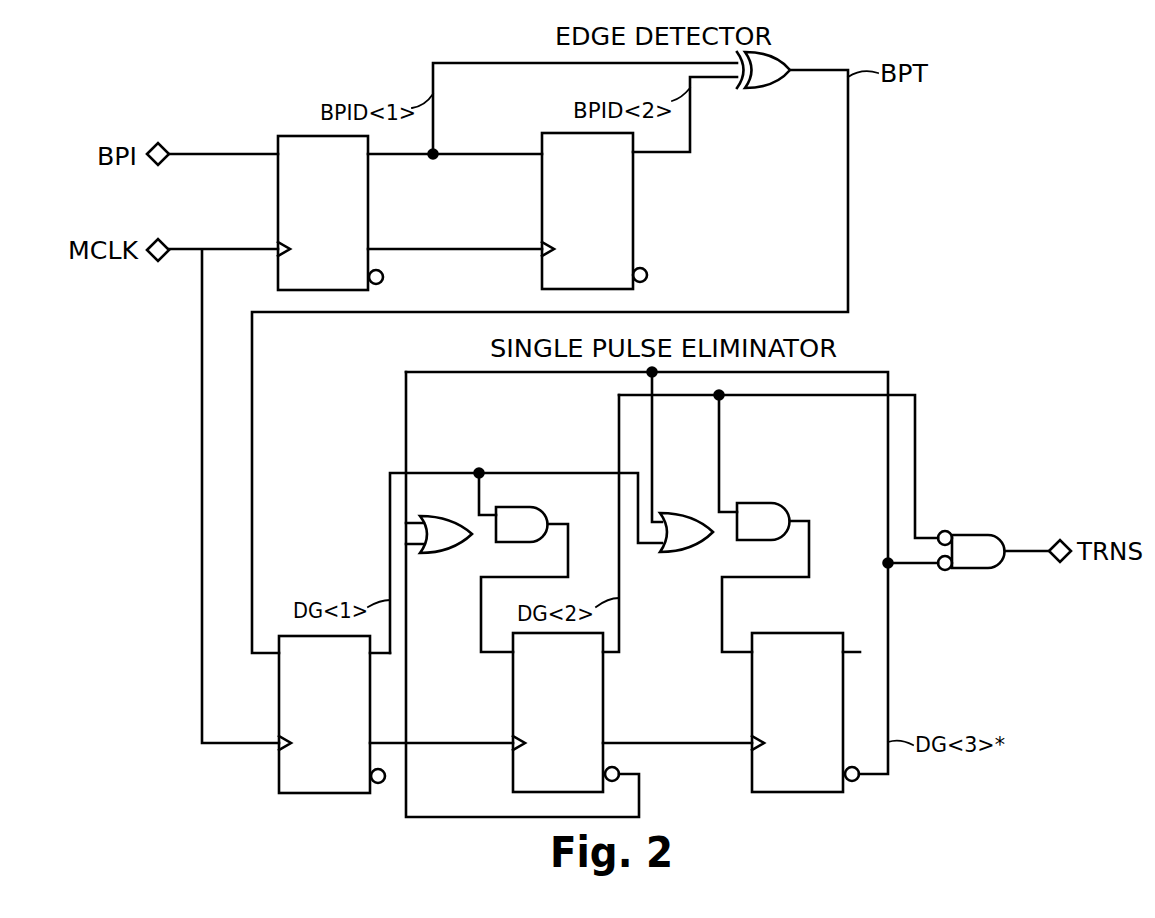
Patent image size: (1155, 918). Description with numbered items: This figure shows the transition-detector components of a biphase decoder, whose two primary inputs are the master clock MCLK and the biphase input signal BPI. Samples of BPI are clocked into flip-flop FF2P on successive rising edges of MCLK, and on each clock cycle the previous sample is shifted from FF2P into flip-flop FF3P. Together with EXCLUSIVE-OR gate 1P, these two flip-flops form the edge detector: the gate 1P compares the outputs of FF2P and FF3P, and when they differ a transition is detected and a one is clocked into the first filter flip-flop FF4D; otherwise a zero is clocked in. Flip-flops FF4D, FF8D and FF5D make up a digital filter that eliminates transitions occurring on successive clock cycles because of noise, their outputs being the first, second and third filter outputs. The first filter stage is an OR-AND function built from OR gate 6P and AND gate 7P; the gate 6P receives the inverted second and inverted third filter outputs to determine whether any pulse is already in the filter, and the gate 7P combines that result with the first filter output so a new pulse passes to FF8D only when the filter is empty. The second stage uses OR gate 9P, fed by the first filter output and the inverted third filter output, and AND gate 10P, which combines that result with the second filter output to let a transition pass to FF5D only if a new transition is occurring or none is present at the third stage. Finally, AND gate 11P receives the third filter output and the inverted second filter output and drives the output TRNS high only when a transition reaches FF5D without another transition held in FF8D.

The EXCLUSIVE-OR gate 1P is at (763, 70).
The OR gate 6P is at (446, 534).
The AND gate 7P is at (522, 524).
The OR gate 9P is at (686, 532).
The AND gate 10P is at (763, 521).
The AND gate 11P is at (971, 550).
The flip-flop FF2P is at (330, 213).
The flip-flop FF3P is at (594, 211).
The flip-flop FF4D is at (332, 714).
The flip-flop FF8D is at (566, 712).
The flip-flop FF5D is at (805, 712).